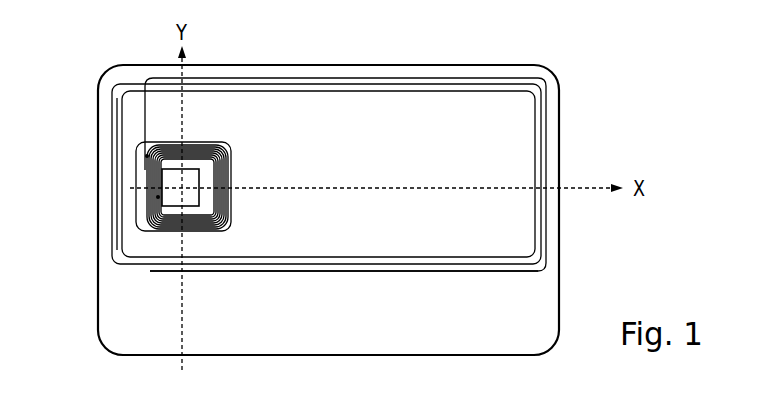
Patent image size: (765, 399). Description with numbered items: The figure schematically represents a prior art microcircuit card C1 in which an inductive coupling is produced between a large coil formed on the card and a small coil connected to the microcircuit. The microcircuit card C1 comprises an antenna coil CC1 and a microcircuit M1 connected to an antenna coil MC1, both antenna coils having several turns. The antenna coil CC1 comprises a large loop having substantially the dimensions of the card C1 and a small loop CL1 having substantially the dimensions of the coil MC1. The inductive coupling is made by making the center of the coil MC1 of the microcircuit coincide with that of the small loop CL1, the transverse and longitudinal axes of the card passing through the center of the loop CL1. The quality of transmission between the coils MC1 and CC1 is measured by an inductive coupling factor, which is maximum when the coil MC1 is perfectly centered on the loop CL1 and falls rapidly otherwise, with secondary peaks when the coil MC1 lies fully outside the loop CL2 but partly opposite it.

The microcircuit card C1 is at (99, 81).
The antenna coil CC1 is at (533, 144).
The antenna coil MC1 is at (147, 170).
The microcircuit M1 is at (160, 199).
The loop CL2 is at (166, 230).
The small loop CL1 is at (150, 271).